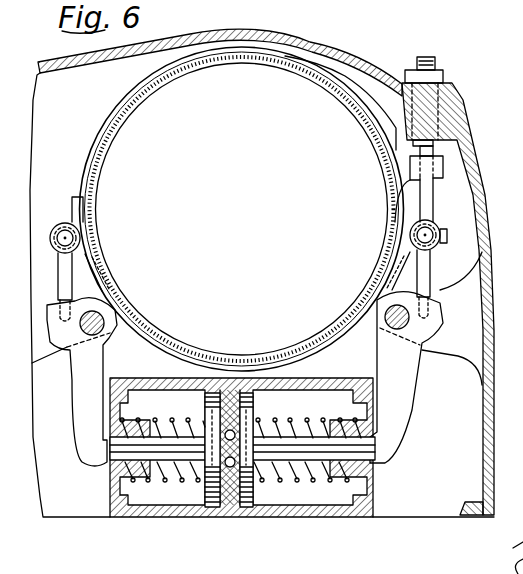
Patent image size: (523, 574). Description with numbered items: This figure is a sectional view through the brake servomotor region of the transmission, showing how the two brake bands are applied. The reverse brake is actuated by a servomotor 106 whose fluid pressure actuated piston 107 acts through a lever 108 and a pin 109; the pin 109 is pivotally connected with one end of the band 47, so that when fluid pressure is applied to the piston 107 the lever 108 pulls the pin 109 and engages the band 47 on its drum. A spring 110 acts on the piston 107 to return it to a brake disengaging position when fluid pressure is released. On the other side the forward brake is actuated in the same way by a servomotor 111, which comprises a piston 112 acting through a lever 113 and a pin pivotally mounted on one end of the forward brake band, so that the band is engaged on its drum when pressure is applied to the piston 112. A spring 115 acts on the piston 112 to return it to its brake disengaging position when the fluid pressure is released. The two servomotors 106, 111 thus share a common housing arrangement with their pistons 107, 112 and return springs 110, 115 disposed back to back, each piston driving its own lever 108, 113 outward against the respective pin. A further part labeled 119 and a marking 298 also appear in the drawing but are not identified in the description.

The band 47 is at (320, 60).
The servomotor 106 is at (310, 519).
The piston 107 is at (250, 518).
The lever 108 is at (405, 406).
The pin 109 is at (427, 270).
The spring 110 is at (275, 418).
The servomotor 111 is at (155, 523).
The piston 112 is at (212, 509).
The lever 113 is at (80, 403).
The spring 115 is at (175, 420).
The left rod 119 is at (60, 271).
The reference 298 is at (522, 8).